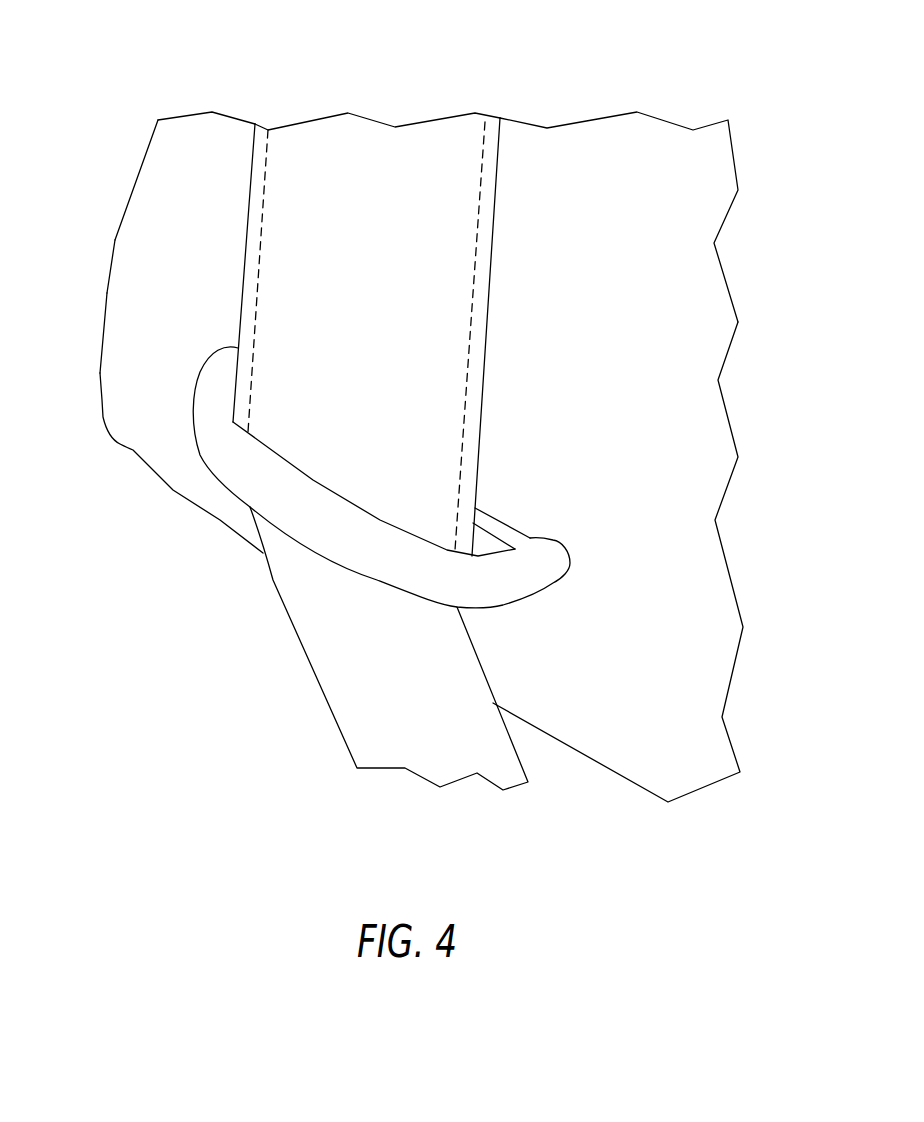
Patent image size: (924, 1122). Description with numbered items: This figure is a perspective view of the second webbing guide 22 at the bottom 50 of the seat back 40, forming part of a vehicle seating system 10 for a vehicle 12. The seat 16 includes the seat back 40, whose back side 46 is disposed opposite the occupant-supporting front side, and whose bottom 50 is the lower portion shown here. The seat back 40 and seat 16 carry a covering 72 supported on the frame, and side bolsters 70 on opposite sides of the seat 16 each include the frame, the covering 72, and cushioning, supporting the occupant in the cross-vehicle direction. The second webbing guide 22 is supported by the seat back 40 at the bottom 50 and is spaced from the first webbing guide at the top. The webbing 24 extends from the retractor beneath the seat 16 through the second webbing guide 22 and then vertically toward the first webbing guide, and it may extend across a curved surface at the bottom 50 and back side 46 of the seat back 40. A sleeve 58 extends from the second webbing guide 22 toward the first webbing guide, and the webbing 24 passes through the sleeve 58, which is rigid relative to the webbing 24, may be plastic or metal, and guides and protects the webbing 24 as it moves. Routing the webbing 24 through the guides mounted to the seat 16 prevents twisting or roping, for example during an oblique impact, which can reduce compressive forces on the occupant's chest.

The vehicle seating system 10 is at (135, 54).
The vehicle 12 is at (91, 70).
The seat 16 is at (155, 188).
The second webbing guide 22 is at (543, 557).
The webbing 24 is at (478, 250).
The seat back 40 is at (125, 248).
The back side 46 is at (654, 198).
The bottom 50 is at (123, 378).
The sleeve 58 is at (487, 325).
The side bolster 70 is at (107, 292).
The covering 72 is at (677, 282).